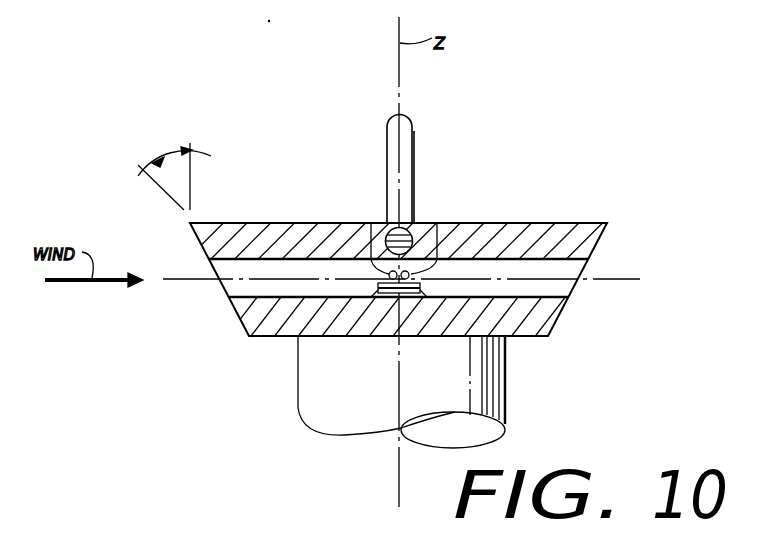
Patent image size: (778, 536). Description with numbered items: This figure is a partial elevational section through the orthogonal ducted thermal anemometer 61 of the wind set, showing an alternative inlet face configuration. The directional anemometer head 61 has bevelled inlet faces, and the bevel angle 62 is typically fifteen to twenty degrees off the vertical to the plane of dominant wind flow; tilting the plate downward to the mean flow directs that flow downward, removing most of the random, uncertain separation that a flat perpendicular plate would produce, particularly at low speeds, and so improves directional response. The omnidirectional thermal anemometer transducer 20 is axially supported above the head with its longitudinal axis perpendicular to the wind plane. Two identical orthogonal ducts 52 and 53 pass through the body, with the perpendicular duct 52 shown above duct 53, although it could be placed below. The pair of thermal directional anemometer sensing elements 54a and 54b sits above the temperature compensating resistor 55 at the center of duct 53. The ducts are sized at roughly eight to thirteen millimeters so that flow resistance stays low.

The omnidirectional thermal anemometer transducer 20 is at (414, 131).
The duct 52 is at (413, 222).
The duct 53 is at (580, 279).
The thermal directional anemometer sensing element 54a is at (371, 215).
The thermal directional anemometer sensing element 54b is at (440, 258).
The temperature compensating resistor 55 is at (380, 297).
The orthogonal ducted thermal anemometer 61 is at (275, 216).
The bevel angle 62 is at (174, 152).